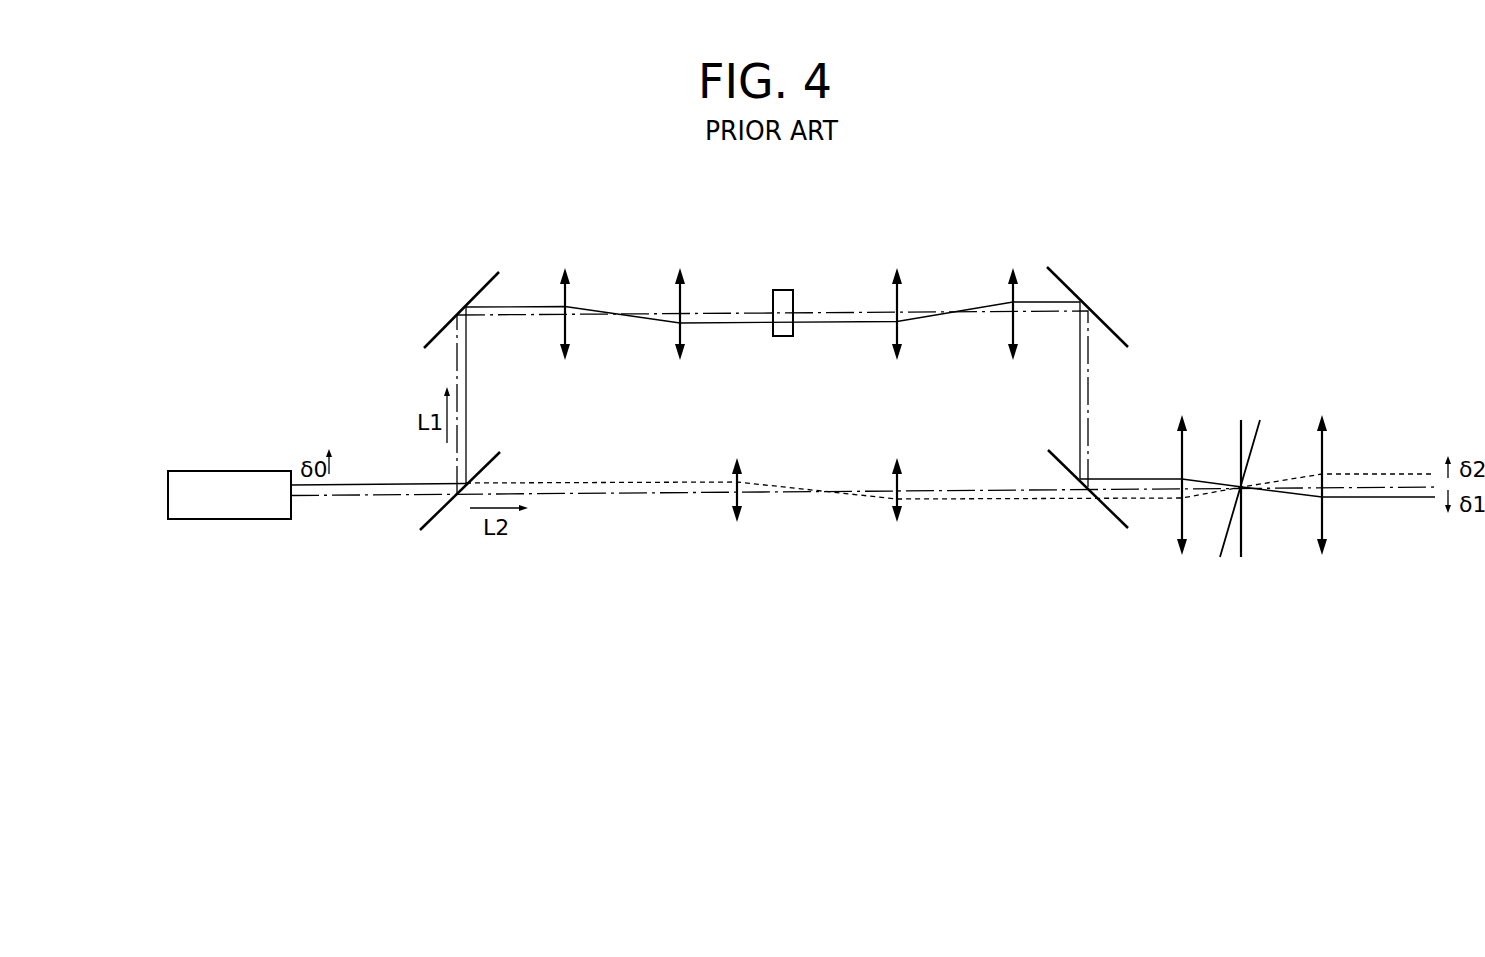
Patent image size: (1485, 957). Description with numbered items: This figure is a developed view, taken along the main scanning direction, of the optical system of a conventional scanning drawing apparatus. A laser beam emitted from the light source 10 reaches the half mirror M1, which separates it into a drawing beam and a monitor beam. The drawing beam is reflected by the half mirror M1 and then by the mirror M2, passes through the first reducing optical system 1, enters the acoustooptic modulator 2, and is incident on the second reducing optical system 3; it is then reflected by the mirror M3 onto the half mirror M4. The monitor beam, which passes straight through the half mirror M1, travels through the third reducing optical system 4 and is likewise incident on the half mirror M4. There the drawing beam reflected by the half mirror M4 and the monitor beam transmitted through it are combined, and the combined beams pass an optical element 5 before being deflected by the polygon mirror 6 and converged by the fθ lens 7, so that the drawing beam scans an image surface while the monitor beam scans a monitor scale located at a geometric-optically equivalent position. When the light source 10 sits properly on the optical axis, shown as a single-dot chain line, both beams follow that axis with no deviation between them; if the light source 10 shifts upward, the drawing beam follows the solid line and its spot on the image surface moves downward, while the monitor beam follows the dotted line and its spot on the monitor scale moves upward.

The first reducing optical system 1 is at (625, 368).
The acoustooptic modulator 2 is at (783, 336).
The second reducing optical system 3 is at (957, 366).
The third reducing optical system 4 is at (809, 537).
The lens 5 is at (1183, 558).
The polygon mirror 6 is at (1237, 558).
The fθ lens 7 is at (1323, 558).
The light source 10 is at (254, 513).
The half mirror M1 is at (437, 522).
The mirror M2 is at (425, 343).
The mirror M3 is at (1120, 340).
The half mirror M4 is at (1113, 515).